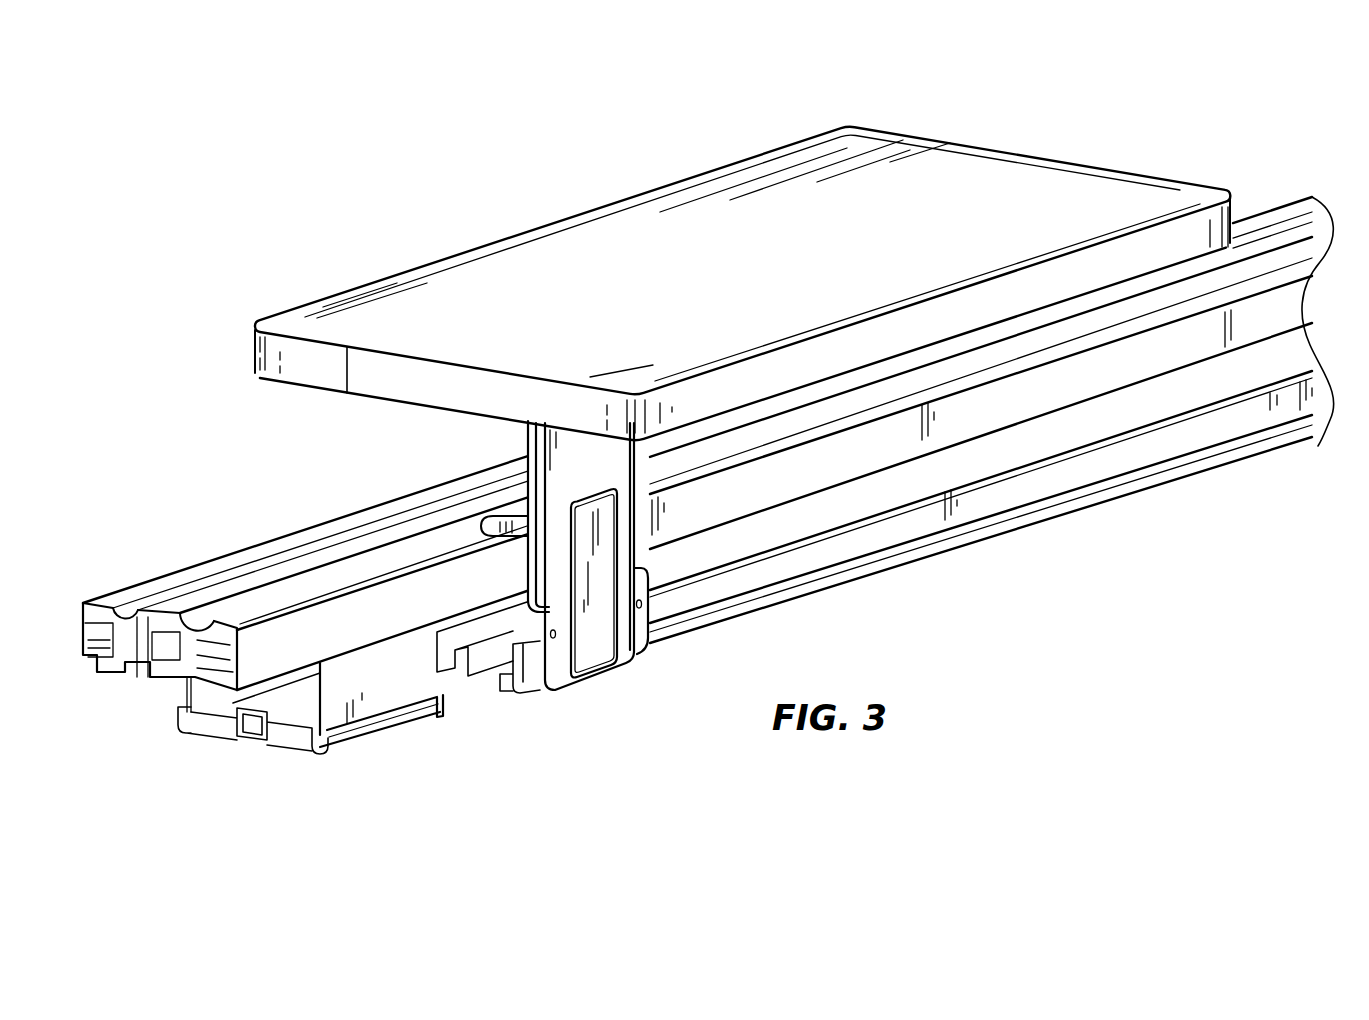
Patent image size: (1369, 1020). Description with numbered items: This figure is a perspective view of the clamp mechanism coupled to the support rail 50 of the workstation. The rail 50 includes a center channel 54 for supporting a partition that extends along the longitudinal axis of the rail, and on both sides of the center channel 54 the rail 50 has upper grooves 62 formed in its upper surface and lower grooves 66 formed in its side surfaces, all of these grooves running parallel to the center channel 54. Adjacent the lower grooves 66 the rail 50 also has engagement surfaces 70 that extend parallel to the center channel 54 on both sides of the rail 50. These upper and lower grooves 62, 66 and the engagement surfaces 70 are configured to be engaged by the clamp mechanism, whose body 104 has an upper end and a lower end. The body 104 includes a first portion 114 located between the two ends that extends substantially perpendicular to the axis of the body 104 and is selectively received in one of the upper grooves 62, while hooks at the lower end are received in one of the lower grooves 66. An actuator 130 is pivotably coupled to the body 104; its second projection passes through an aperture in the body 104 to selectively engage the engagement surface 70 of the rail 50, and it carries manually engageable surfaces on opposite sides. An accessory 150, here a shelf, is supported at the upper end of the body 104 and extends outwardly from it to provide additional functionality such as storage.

The support rail 50 is at (1267, 247).
The center channel 54 is at (152, 618).
The upper grooves 62 is at (215, 618).
The lower grooves 66 is at (176, 723).
The engagement surfaces 70 is at (375, 688).
The body 104 is at (491, 475).
The first portion 114 is at (503, 532).
The actuator 130 is at (583, 620).
The accessory 150 is at (983, 193).